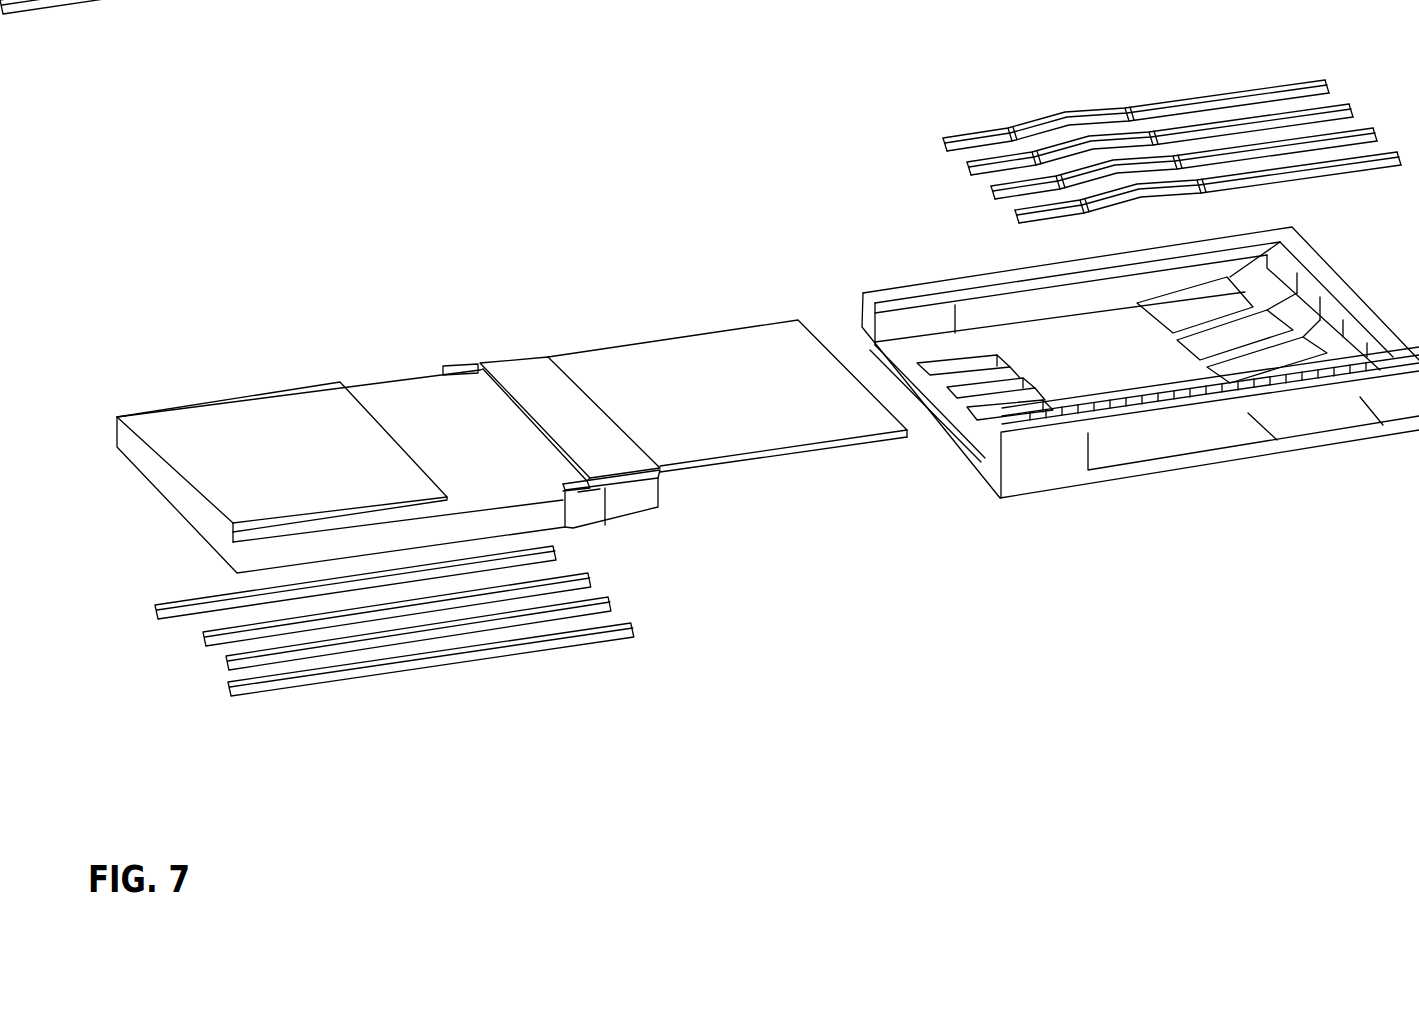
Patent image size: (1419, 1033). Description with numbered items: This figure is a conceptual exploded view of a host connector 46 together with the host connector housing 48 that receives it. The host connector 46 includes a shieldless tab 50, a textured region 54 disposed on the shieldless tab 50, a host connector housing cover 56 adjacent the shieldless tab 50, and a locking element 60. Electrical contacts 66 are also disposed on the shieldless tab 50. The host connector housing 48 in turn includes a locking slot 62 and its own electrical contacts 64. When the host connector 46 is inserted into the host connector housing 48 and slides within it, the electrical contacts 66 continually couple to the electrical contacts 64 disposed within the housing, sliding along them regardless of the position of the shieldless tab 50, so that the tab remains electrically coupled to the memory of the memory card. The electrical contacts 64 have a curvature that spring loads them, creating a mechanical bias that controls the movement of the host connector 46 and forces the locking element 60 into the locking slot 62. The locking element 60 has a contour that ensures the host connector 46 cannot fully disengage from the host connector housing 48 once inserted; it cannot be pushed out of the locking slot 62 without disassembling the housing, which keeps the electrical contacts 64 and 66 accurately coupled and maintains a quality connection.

The host connector 46 is at (319, 244).
The host connector housing 48 is at (1038, 482).
The shieldless tab 50 is at (238, 432).
The textured region 54 is at (527, 364).
The host connector housing cover 56 is at (702, 344).
The locking element 60 is at (623, 540).
The locking slot 62 is at (1168, 438).
The electrical contacts 64 is at (1188, 74).
The electrical contacts 66 is at (451, 690).